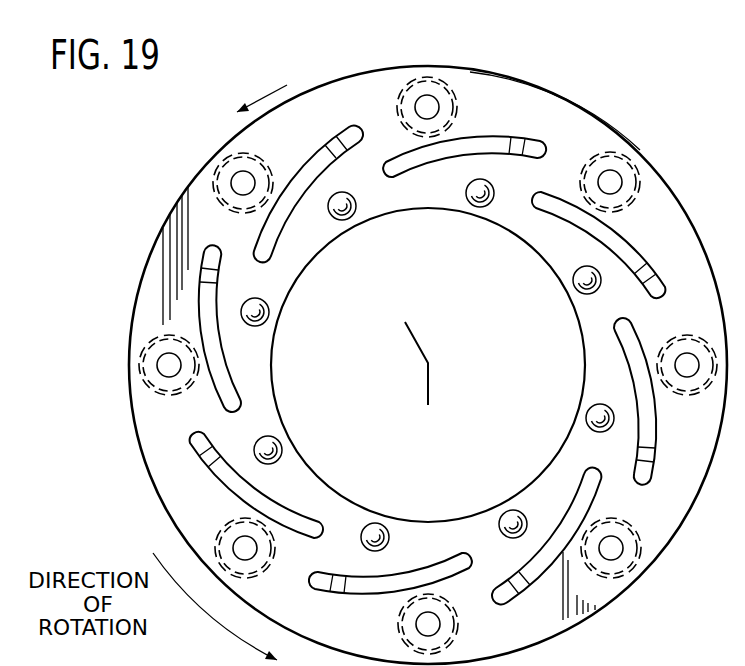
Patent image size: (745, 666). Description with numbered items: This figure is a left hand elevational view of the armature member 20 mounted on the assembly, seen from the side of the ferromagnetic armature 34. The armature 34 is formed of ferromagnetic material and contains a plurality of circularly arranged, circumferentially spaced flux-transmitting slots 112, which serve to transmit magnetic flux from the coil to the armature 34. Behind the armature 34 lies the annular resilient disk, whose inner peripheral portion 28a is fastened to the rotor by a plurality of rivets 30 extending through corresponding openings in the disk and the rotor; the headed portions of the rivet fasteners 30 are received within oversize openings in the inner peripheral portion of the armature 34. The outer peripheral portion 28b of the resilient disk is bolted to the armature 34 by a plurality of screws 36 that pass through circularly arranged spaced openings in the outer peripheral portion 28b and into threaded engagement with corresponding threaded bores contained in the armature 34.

The rotor disc 20 is at (298, 133).
The inner peripheral portion 28a is at (546, 258).
The outer peripheral portion 28b is at (567, 140).
The rivets 30 is at (334, 222).
The ferromagnetic armature 34 is at (527, 102).
The screws 36 is at (427, 105).
The flux-transmitting slots 112 is at (472, 147).